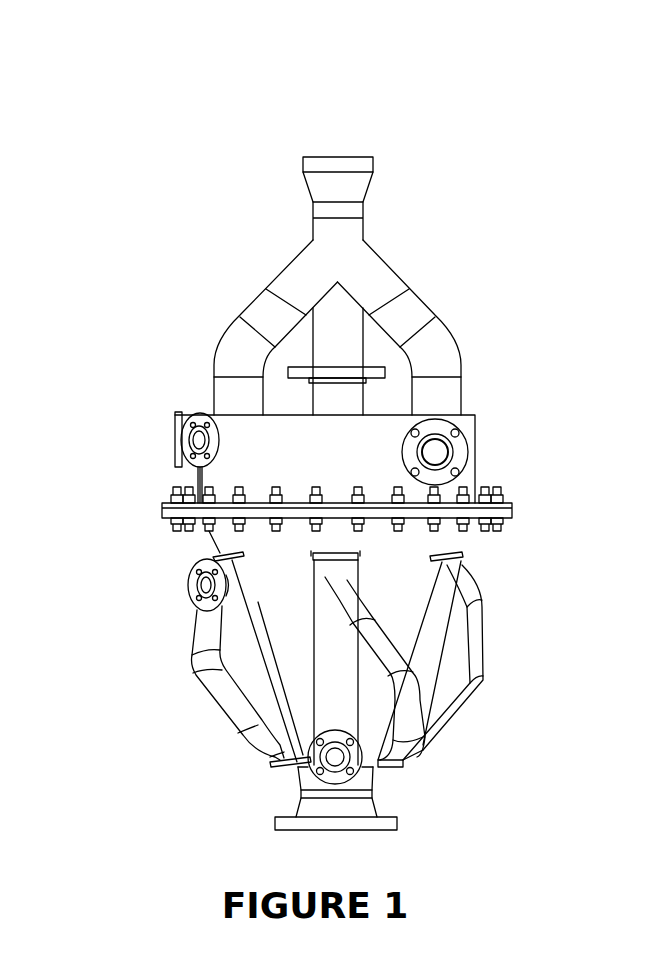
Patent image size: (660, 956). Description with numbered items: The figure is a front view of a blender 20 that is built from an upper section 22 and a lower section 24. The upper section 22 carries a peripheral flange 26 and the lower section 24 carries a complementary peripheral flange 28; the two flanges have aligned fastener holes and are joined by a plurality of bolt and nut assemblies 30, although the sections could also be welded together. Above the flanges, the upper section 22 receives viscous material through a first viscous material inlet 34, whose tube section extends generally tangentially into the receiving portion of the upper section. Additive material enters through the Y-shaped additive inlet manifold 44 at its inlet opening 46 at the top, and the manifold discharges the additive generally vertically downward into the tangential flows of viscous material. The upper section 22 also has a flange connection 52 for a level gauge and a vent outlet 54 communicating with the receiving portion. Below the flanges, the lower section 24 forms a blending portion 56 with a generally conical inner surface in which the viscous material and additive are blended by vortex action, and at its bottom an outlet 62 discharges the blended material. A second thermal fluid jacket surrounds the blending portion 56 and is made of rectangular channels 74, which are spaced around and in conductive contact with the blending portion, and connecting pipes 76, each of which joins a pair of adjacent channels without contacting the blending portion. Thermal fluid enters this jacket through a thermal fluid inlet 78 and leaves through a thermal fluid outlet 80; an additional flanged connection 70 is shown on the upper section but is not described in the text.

The blender 20 is at (515, 132).
The upper section 22 is at (478, 472).
The lower section 24 is at (467, 542).
The peripheral flange 26 is at (255, 500).
The complementary peripheral flange 28 is at (300, 525).
The bolt and nut assemblies 30 is at (505, 492).
The first viscous material inlet 34 is at (462, 428).
The Y-shaped additive inlet manifold 44 is at (390, 265).
The inlet opening 46 is at (355, 153).
The flange connection 52 is at (375, 367).
The vent outlet 54 is at (312, 349).
The blending portion 56 is at (200, 543).
The outlet 62 is at (305, 833).
The left flange port 70 is at (184, 440).
The rectangular channels 74 is at (337, 683).
The connecting pipes 76 is at (202, 632).
The thermal fluid inlet 78 is at (352, 760).
The thermal fluid outlet 80 is at (195, 587).